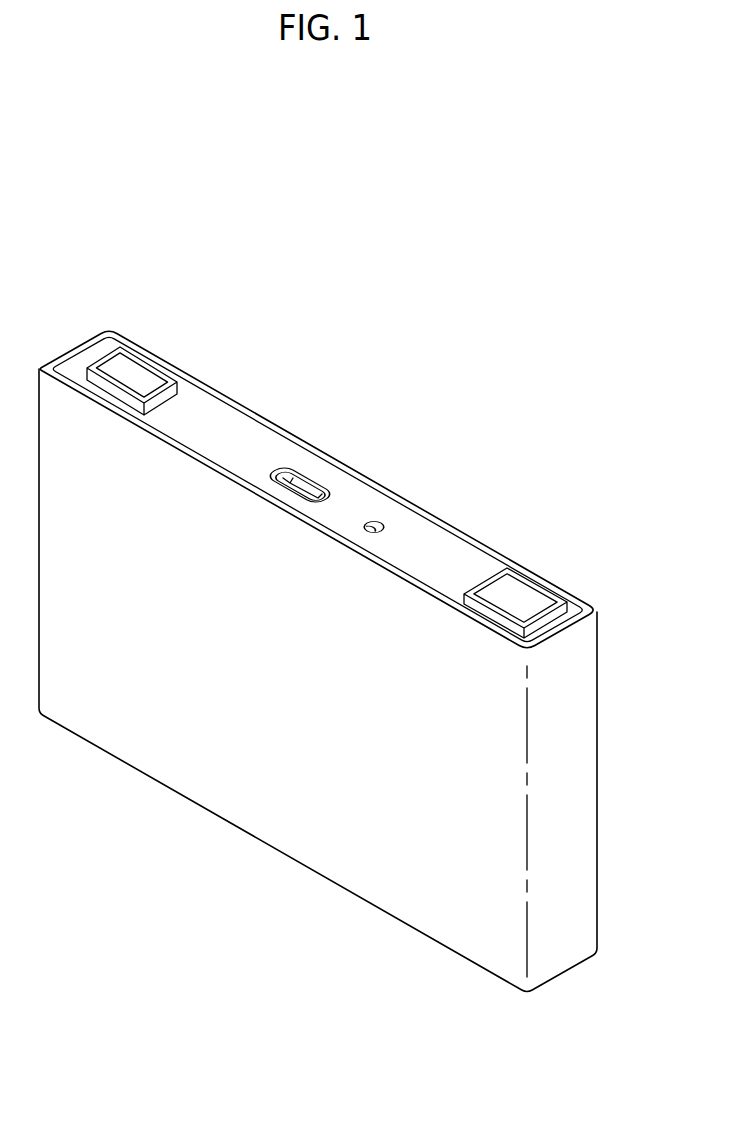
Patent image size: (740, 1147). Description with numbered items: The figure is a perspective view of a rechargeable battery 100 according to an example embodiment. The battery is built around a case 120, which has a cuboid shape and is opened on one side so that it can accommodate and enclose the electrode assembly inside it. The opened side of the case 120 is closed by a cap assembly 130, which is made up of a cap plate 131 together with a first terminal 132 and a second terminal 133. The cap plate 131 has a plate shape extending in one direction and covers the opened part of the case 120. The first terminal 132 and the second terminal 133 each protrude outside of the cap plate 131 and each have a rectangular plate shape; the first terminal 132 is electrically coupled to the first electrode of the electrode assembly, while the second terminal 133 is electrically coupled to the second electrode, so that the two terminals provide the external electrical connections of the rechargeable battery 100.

The rechargeable battery 100 is at (378, 181).
The case 120 is at (230, 807).
The cap assembly 130 is at (318, 473).
The cap plate 131 is at (413, 533).
The first terminal 132 is at (520, 593).
The second terminal 133 is at (147, 372).